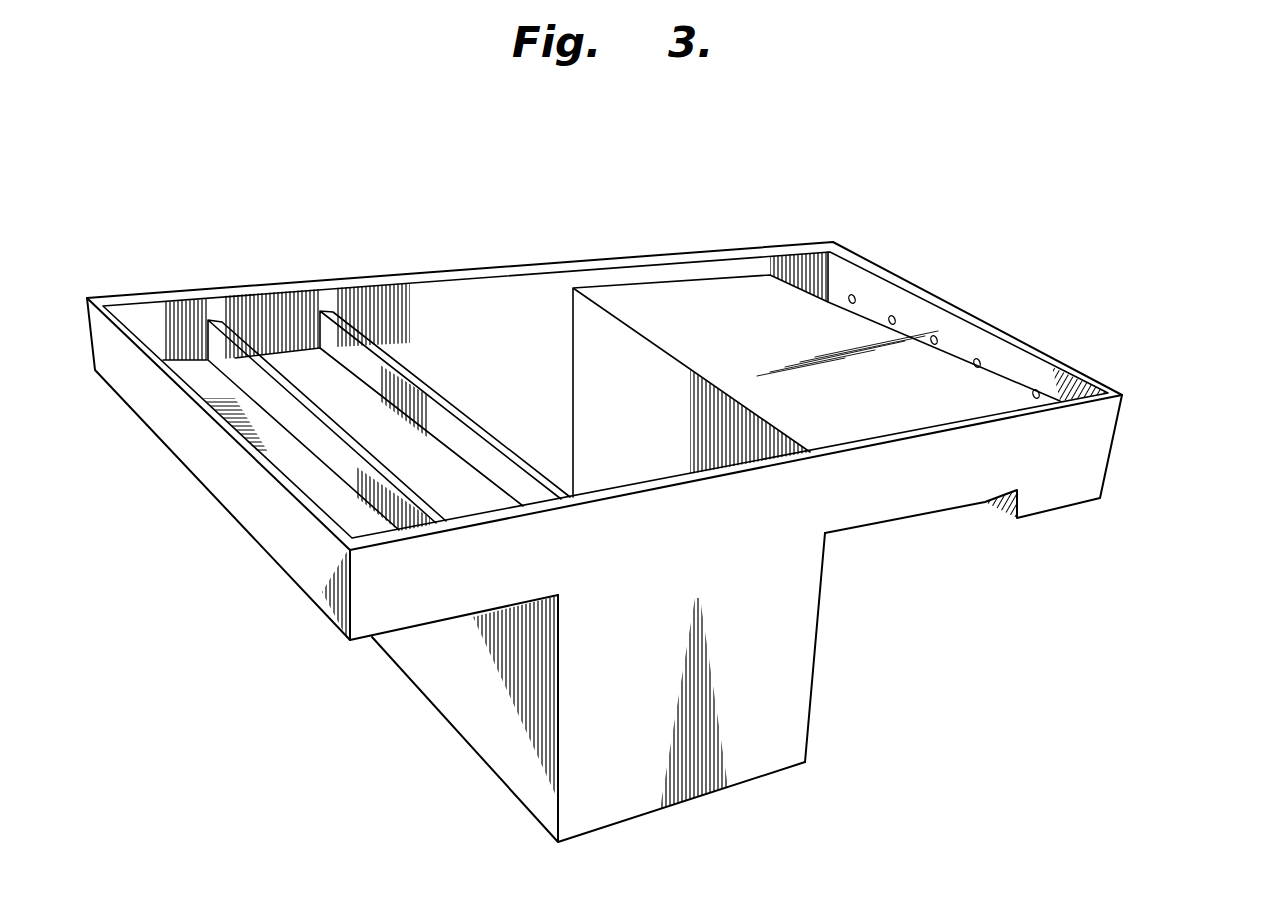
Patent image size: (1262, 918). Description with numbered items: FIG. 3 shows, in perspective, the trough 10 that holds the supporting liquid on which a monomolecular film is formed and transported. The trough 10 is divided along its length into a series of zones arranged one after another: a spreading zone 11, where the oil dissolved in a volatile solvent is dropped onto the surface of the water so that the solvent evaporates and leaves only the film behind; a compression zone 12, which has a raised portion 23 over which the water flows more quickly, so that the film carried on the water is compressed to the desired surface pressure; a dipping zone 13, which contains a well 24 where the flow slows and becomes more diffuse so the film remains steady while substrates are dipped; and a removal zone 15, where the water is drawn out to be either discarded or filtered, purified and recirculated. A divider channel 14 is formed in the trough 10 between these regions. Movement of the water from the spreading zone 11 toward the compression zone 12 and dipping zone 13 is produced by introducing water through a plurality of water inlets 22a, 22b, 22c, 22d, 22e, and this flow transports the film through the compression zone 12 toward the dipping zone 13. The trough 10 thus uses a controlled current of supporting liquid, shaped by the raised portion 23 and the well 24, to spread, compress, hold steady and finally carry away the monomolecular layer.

The trough 10 is at (486, 695).
The spreading zone 11 is at (788, 262).
The compression zone 12 is at (893, 412).
The dipping zone 13 is at (486, 356).
The divider channel 14 is at (305, 376).
The removal zone 15 is at (295, 468).
The water inlet 22a is at (853, 296).
The water inlet 22b is at (894, 318).
The water inlet 22c is at (937, 338).
The water inlet 22d is at (979, 362).
The water inlet 22e is at (1039, 393).
The raised portion 23 is at (670, 274).
The well 24 is at (813, 697).